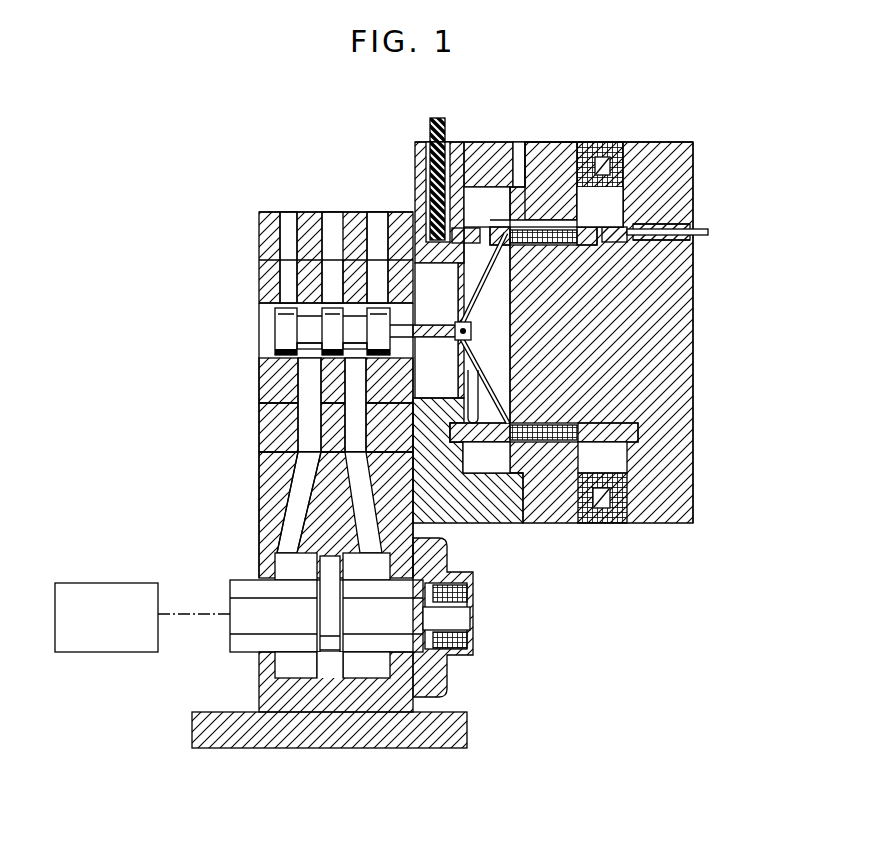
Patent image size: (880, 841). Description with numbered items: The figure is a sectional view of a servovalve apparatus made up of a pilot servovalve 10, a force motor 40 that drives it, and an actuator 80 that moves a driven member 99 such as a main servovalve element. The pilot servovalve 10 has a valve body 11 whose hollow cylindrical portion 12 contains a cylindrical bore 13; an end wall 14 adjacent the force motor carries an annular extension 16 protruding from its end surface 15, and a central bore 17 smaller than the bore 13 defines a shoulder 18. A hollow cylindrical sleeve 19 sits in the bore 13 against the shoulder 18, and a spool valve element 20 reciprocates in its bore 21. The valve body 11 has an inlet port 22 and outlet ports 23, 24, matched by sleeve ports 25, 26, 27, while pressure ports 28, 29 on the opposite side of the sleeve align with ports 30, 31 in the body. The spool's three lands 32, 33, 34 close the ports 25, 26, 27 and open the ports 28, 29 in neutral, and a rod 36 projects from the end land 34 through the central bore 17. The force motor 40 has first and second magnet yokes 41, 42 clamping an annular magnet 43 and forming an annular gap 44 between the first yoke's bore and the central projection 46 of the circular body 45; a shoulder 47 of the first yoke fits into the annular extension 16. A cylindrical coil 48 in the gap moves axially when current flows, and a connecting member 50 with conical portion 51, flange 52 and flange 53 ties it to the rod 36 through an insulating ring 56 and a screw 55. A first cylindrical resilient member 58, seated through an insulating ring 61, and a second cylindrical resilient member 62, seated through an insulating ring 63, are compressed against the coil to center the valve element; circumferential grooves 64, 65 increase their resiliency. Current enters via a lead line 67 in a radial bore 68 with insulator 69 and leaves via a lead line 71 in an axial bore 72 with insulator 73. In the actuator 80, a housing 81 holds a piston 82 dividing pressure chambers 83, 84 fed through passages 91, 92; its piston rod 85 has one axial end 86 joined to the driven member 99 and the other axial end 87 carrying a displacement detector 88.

The pilot servovalve 10 is at (252, 330).
The valve body 11 is at (257, 236).
The hollow cylindrical portion 12 is at (362, 218).
The cylindrical bore 13 is at (259, 268).
The end wall 14 is at (415, 158).
The end surface 15 is at (470, 196).
The annular extension 16 is at (489, 142).
The central bore 17 is at (436, 367).
The shoulder 18 is at (436, 294).
The hollow cylindrical sleeve 19 is at (259, 400).
The spool valve element 20 is at (274, 337).
The bore 21 is at (259, 358).
The inlet port 22 is at (336, 238).
The outlet port 23 is at (292, 232).
The outlet port 24 is at (390, 238).
The port 25 is at (318, 240).
The port 26 is at (283, 290).
The port 27 is at (387, 272).
The pressure port 28 is at (300, 410).
The pressure port 29 is at (364, 446).
The port 30 is at (312, 437).
The port 31 is at (368, 452).
The land 32 is at (272, 318).
The land 33 is at (350, 348).
The end land 34 is at (466, 460).
The rod 36 is at (436, 316).
The force motor 40 is at (710, 152).
The first magnet yoke 41 is at (537, 142).
The second magnet yoke 42 is at (682, 144).
The annular magnet 43 is at (598, 146).
The annular gap 44 is at (560, 218).
The circular body 45 is at (660, 143).
The central projection 46 is at (558, 312).
The shoulder 47 is at (519, 178).
The cylindrical coil 48 is at (552, 245).
The connecting member 50 is at (487, 374).
The conical portion 51 is at (489, 353).
The flange 52 is at (486, 457).
The flange 53 is at (470, 337).
The screw 55 is at (470, 331).
The electrically insulating ring 56 is at (453, 338).
The first cylindrical resilient member 58 is at (499, 232).
The electrically insulating ring 61 is at (468, 225).
The second cylindrical resilient member 62 is at (618, 224).
The electrically insulating ring 63 is at (627, 452).
The circumferential grooves 64 is at (500, 252).
The circumferential grooves 65 is at (600, 243).
The lead line 67 is at (439, 118).
The radial bore 68 is at (481, 146).
The insulator 69 is at (432, 150).
The lead line 71 is at (710, 232).
The axial bore 72 is at (690, 226).
The insulator 73 is at (688, 245).
The actuator 80 is at (258, 760).
The housing 81 is at (259, 482).
The piston 82 is at (333, 678).
The pressure chamber 83 is at (296, 566).
The pressure chamber 84 is at (366, 566).
The piston rod 85 is at (249, 629).
The one axial end 86 is at (236, 597).
The other axial end 87 is at (445, 662).
The displacement detector 88 is at (476, 615).
The passage 91 is at (288, 505).
The passage 92 is at (425, 548).
The driven member 99 is at (134, 583).